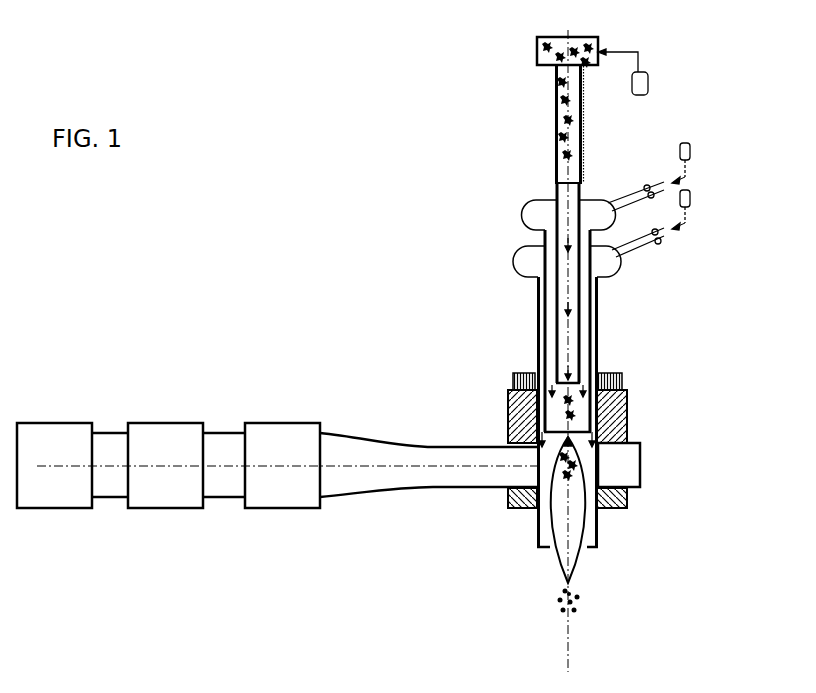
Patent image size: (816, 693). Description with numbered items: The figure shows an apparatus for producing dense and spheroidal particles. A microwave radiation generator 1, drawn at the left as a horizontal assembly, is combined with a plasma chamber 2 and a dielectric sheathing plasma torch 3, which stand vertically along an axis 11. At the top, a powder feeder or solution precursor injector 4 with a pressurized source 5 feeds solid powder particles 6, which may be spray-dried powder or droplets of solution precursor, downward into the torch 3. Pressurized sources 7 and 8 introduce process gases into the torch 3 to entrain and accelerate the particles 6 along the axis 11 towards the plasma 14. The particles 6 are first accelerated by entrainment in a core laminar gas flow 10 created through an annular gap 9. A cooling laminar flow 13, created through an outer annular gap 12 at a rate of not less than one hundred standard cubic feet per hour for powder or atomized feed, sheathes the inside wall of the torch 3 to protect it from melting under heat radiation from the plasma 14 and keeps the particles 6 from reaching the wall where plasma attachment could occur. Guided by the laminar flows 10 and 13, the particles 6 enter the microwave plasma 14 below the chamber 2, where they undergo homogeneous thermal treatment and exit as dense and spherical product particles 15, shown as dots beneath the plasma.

The microwave radiation generator 1 is at (115, 395).
The plasma chamber 2 is at (483, 385).
The dielectric sheathing plasma torch 3 is at (510, 228).
The powder feeder, or solution precursor injector 4 is at (540, 127).
The pressurized source 5 is at (652, 82).
The powder particles 6 is at (582, 145).
The pressurized source 7 is at (698, 153).
The pressurized source 8 is at (698, 195).
The annular gap 9 is at (585, 310).
The core laminar gas flow 10 is at (622, 377).
The axis 11 is at (568, 347).
The annular gap 12 is at (592, 413).
The cooling laminar flow 13 is at (597, 440).
The microwave plasma 14 is at (583, 567).
The dense and spherical product particles 15 is at (582, 615).